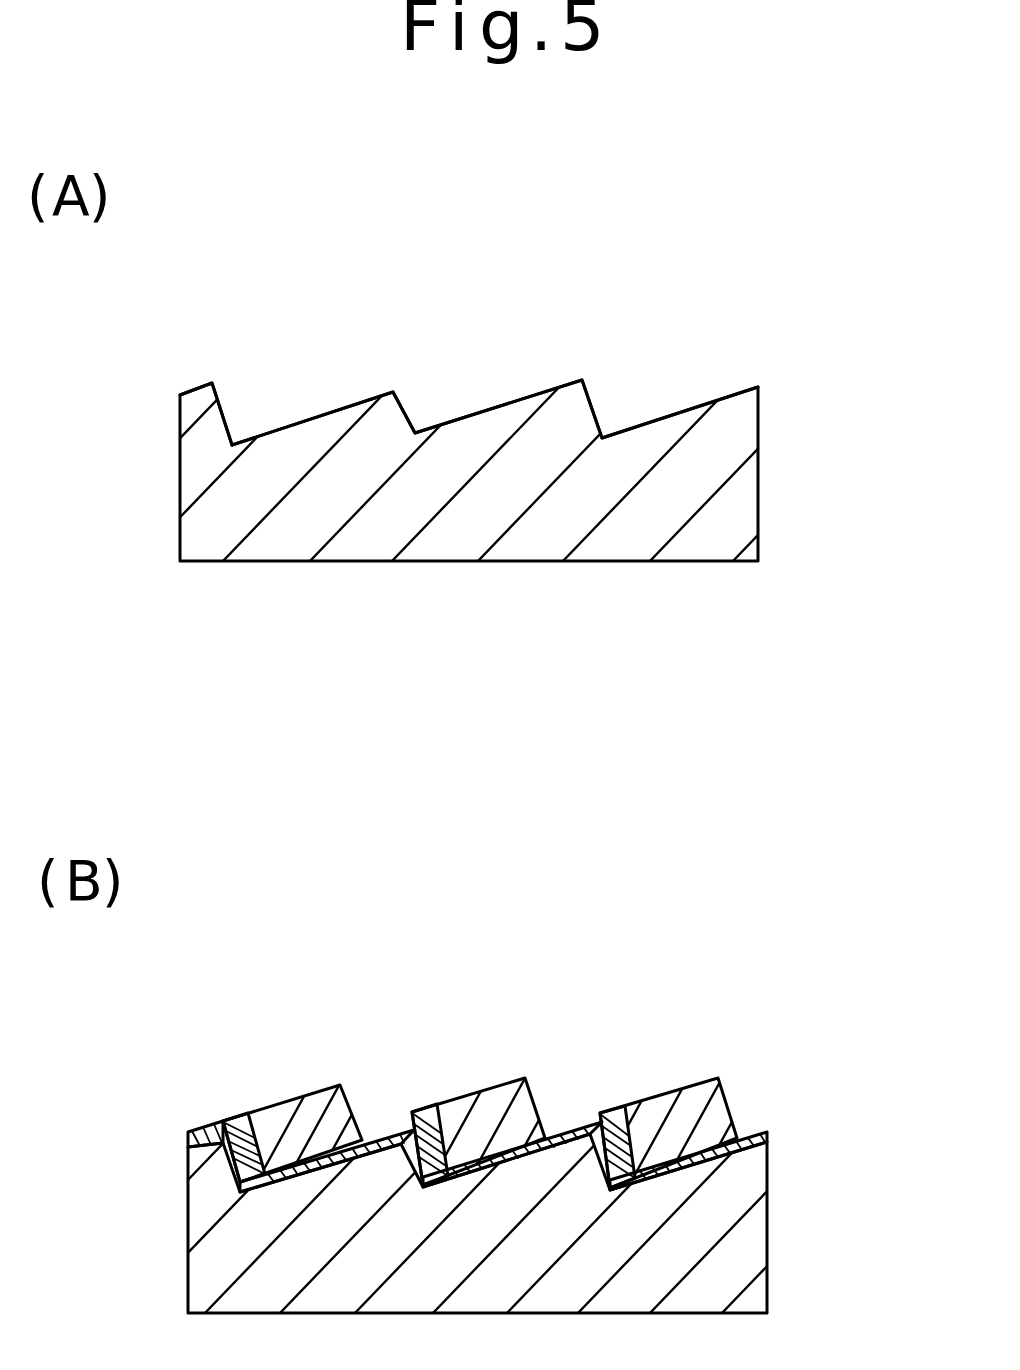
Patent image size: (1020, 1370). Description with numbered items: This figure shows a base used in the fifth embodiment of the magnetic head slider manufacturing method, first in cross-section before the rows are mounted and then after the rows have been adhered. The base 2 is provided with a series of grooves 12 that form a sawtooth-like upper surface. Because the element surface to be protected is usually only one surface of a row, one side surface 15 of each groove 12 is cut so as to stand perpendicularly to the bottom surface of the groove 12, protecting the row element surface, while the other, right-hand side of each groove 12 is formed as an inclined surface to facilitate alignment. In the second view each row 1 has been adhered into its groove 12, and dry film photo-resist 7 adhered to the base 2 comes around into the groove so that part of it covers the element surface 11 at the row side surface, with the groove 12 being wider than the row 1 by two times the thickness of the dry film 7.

The row 1 is at (300, 1125).
The base 2 is at (762, 432).
The dry film photo-resist 7 is at (392, 1125).
The element surface 11 is at (607, 1108).
The groove 12 is at (303, 400).
The side surface 15 is at (225, 422).